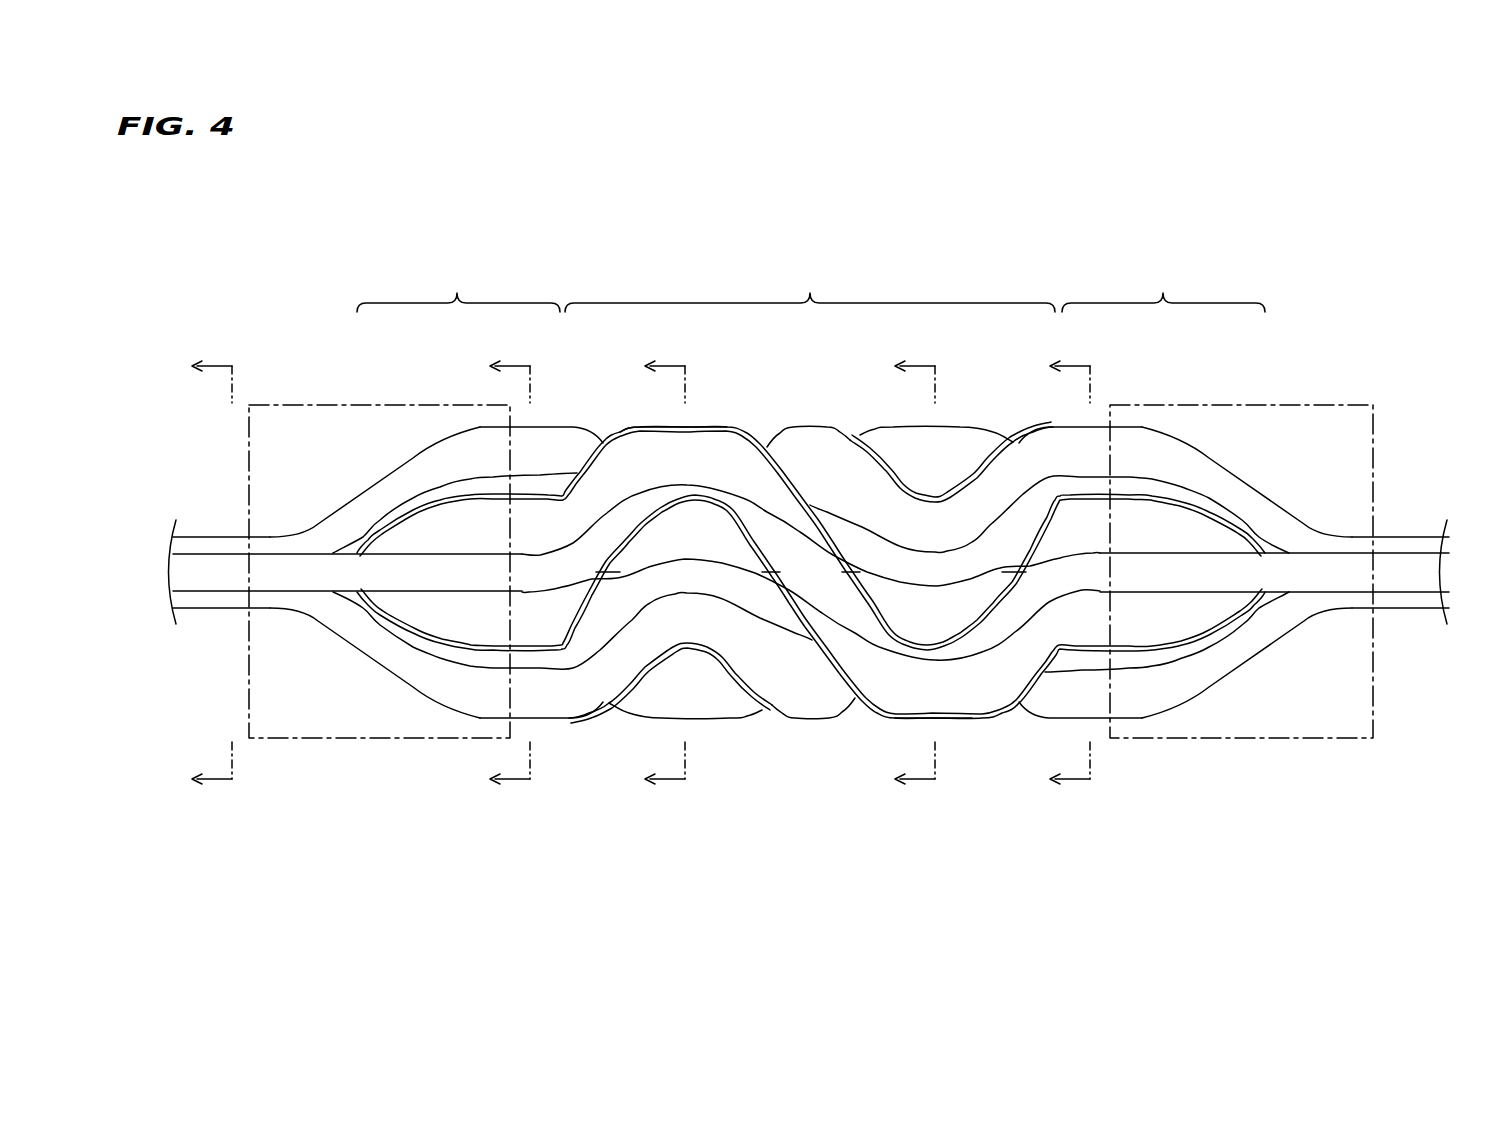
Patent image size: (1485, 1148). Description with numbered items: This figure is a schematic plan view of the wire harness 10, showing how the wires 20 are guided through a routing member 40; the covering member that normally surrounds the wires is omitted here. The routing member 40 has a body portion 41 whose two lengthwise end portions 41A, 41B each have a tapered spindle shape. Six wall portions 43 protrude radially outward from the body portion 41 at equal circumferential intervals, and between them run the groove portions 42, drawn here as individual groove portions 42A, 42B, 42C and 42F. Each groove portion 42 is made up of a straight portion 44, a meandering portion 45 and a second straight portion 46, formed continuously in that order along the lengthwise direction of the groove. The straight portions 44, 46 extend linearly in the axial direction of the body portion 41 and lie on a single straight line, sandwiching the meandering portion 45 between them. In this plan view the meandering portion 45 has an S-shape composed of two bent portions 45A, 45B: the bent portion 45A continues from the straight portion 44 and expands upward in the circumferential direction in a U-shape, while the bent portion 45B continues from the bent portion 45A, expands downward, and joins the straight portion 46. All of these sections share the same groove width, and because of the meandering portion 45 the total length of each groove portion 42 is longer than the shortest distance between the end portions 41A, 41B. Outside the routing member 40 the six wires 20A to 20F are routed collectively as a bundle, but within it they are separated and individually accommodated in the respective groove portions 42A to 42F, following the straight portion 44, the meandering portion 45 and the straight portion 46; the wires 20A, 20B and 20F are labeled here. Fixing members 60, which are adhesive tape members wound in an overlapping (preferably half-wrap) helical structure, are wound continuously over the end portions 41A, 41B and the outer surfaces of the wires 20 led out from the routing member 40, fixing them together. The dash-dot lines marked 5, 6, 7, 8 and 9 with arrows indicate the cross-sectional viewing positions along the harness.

The wire harness 10 is at (1160, 848).
The wires 20 is at (811, 538).
The wire 20A is at (408, 567).
The wire 20B is at (365, 622).
The wire 20F is at (345, 522).
The routing member 40 is at (811, 604).
The body portion 41 is at (1188, 705).
The end portion 41A is at (362, 606).
The end portion 41B is at (1273, 597).
The groove portion 42 is at (799, 654).
The groove portion 42A is at (420, 638).
The groove portion 42B is at (557, 697).
The groove portion 42C is at (742, 686).
The groove portion 42F is at (553, 445).
The wall portion 43 is at (447, 665).
The straight portion 44 is at (458, 288).
The meandering portion 45 is at (811, 539).
The bent portion 45A is at (698, 437).
The bent portion 45B is at (940, 697).
The straight portion 46 is at (1163, 288).
The fixing member 60 is at (302, 403).
The section line 5 is at (200, 575).
The section line 6 is at (497, 575).
The section line 7 is at (655, 575).
The section line 8 is at (902, 575).
The section line 9 is at (1058, 575).